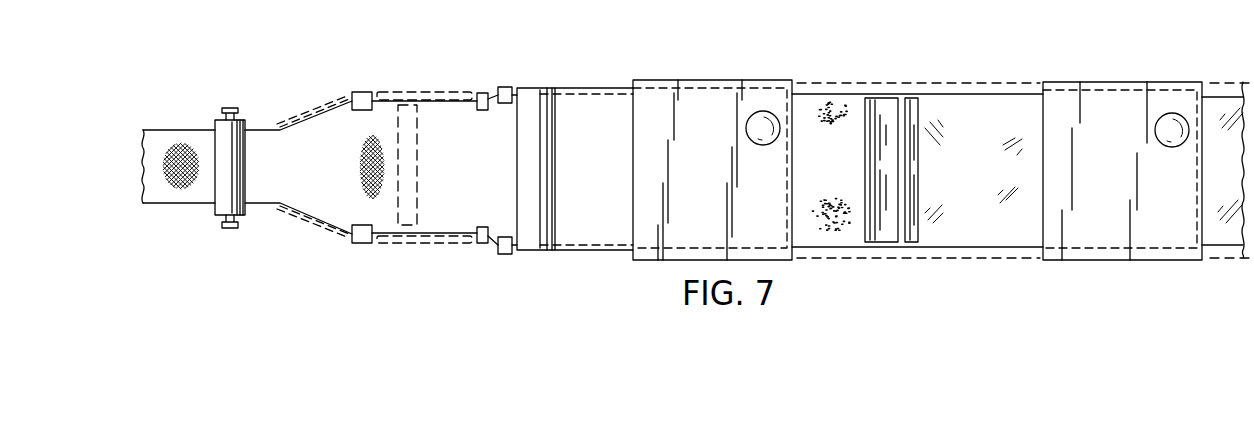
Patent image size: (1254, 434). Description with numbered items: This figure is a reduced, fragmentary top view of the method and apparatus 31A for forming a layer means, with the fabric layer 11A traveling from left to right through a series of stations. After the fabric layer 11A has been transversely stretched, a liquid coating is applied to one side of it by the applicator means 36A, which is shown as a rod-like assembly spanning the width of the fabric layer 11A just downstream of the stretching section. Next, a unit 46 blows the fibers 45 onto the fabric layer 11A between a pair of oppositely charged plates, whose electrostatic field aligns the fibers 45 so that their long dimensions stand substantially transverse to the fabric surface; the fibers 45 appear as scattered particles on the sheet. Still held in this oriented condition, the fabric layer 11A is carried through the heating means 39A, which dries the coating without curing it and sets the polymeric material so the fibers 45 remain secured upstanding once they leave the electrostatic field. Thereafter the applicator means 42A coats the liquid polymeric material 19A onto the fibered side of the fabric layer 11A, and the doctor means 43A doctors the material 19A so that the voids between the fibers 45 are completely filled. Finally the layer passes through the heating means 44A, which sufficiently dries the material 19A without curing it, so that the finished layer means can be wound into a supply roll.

The fabric layer 11A is at (167, 142).
The applicator means 36A is at (446, 84).
The unit 46 is at (537, 100).
The heating means 39A is at (712, 79).
The method and apparatus 31A is at (804, 61).
The fibers 45 is at (837, 107).
The applicator means 42A is at (894, 87).
The doctor means 43A is at (918, 108).
The heating means 44A is at (1129, 77).
The polymeric material 19A is at (947, 227).